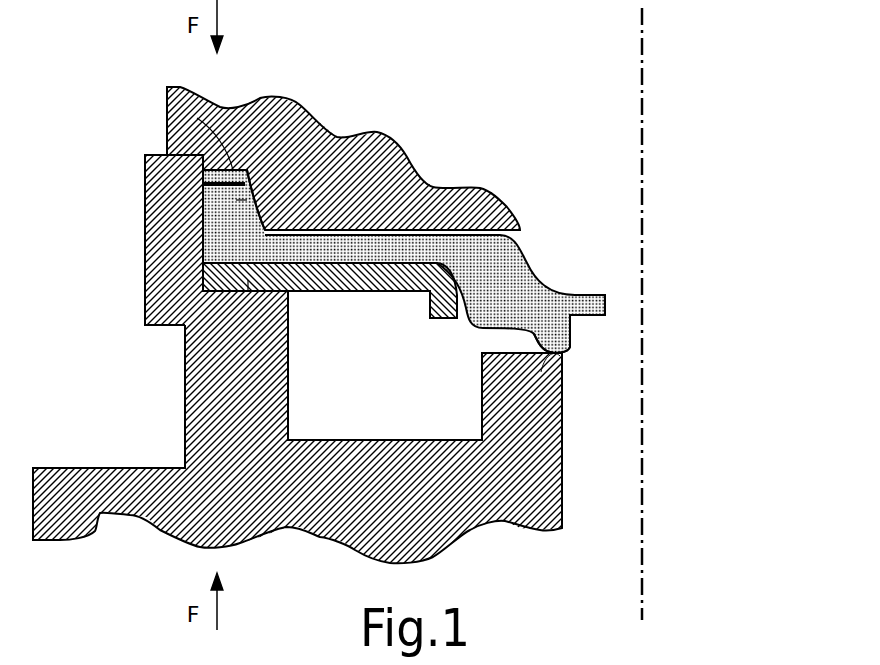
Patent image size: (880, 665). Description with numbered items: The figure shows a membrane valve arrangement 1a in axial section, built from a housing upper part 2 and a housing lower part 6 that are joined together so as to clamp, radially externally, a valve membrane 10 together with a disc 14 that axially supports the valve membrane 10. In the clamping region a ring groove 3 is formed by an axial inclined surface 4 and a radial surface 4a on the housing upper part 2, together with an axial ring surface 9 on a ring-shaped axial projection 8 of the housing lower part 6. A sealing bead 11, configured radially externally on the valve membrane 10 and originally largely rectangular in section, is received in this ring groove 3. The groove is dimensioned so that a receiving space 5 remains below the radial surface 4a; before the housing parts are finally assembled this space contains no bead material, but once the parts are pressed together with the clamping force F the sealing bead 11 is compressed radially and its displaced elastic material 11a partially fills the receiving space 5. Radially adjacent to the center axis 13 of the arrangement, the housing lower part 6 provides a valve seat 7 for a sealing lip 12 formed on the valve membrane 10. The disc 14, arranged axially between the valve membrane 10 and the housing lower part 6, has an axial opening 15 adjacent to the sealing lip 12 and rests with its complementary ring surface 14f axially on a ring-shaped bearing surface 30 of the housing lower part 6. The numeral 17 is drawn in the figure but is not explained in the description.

The membrane valve arrangement 1a is at (693, 123).
The housing upper part 2 is at (392, 137).
The ring groove 3 is at (247, 170).
The axial inclined surface 4 is at (262, 212).
The radial surface 4a is at (200, 120).
The receiving space 5 is at (247, 170).
The housing lower part 6 is at (161, 485).
The valve seat 7 is at (559, 357).
The ring-shaped axial projection 8 is at (163, 220).
The axial ring surface 9 is at (221, 240).
The valve membrane 10 is at (531, 284).
The sealing bead 11 is at (215, 198).
The displaced elastic material 11a is at (215, 176).
The sealing lip 12 is at (560, 338).
The center axis 13 is at (645, 212).
The disc 14 is at (374, 280).
The complementary ring surface 14f is at (227, 293).
The axial opening 15 is at (464, 312).
The sealing edge 17 is at (233, 163).
The ring-shaped bearing surface 30 is at (250, 282).